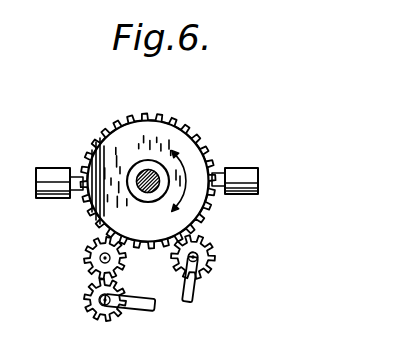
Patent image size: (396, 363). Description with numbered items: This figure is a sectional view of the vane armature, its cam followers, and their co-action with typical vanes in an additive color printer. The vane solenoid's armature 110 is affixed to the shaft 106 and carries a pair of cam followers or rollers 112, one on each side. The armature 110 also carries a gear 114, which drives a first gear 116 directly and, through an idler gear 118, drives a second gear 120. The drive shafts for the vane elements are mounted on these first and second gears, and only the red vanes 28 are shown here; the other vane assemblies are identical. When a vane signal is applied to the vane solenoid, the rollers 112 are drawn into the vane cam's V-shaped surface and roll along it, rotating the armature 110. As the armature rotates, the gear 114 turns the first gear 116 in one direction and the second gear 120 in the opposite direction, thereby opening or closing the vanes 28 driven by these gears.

The armature 110 is at (172, 124).
The gear 114 is at (202, 212).
The shaft 106 is at (155, 170).
The cam followers or rollers 112 is at (51, 170).
The idler gear 118 is at (84, 261).
The second gear 120 is at (92, 316).
The first gear 116 is at (213, 265).
The red vanes 28 is at (187, 302).